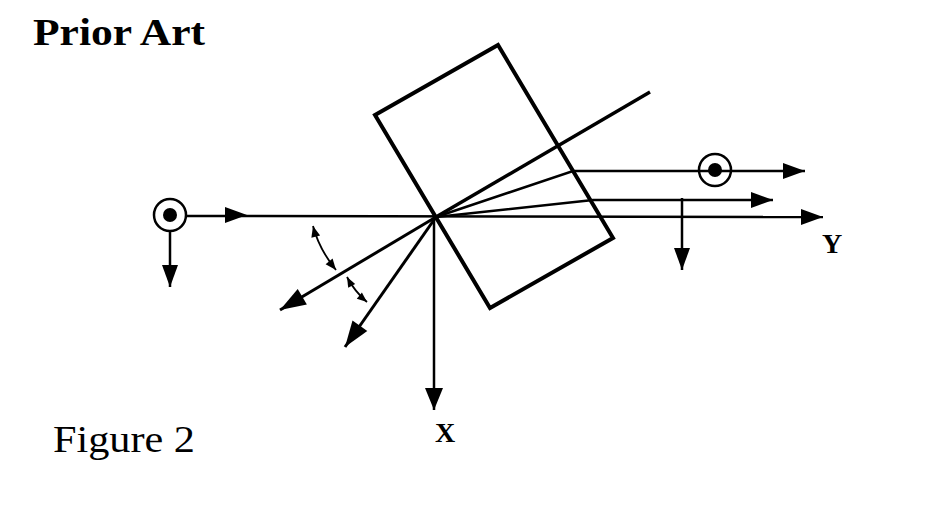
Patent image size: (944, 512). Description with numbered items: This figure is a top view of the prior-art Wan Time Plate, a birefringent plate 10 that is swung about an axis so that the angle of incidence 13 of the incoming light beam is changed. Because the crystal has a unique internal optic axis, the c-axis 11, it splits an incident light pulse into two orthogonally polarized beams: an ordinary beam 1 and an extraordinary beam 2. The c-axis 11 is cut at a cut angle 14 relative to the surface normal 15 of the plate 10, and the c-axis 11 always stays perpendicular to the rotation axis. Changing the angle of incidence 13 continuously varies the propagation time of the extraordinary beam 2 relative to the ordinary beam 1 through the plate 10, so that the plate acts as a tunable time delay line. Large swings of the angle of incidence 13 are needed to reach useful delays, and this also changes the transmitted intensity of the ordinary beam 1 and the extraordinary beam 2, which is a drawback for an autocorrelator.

The ordinary beam 1 is at (164, 196).
The extraordinary beam 2 is at (170, 255).
The birefringent plate 10 is at (530, 305).
The c-axis 11 is at (372, 323).
The angle of incidence 13 is at (315, 265).
The cut angle 14 is at (350, 297).
The surface normal 15 is at (303, 290).